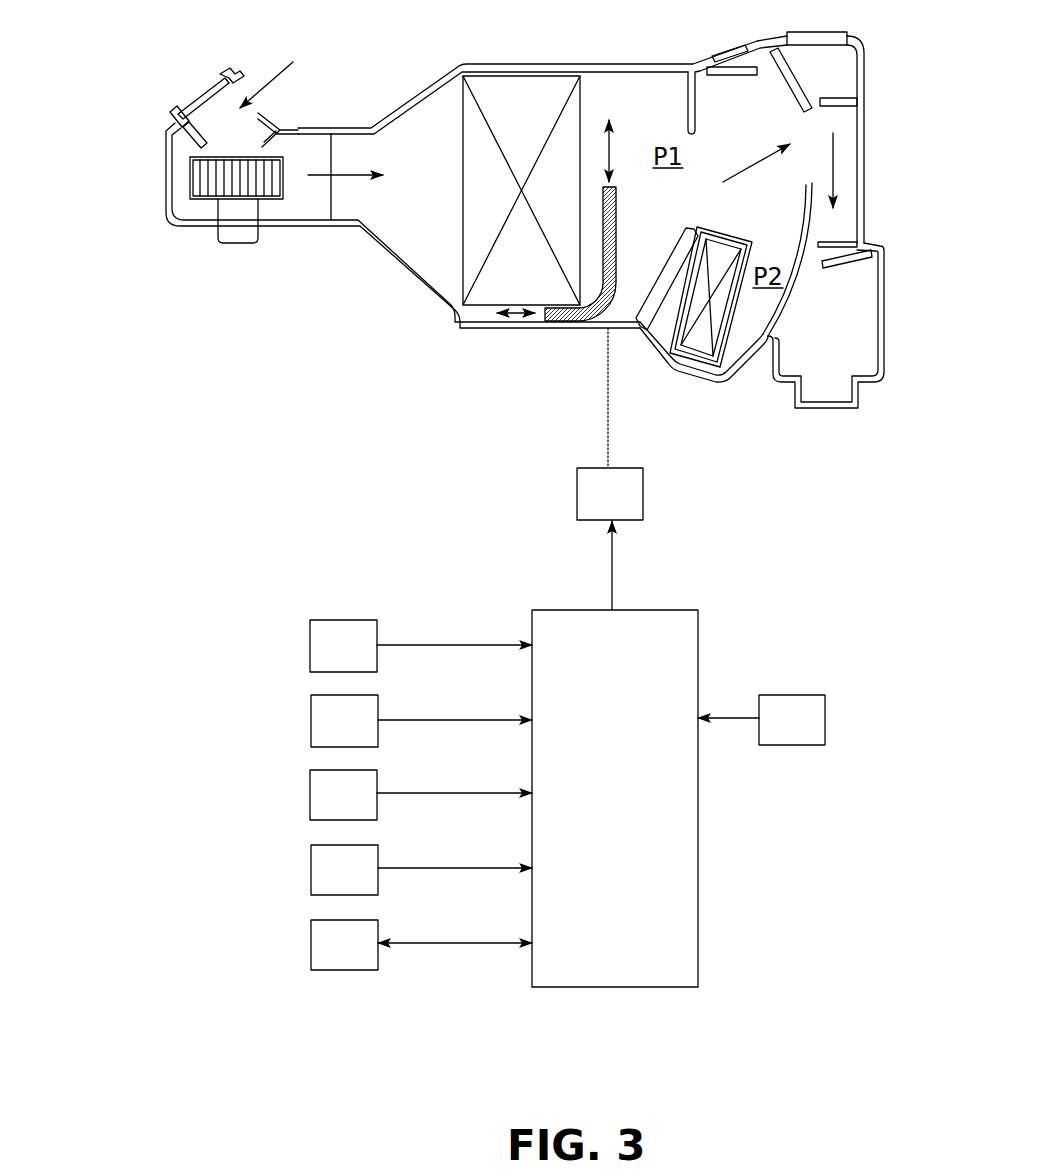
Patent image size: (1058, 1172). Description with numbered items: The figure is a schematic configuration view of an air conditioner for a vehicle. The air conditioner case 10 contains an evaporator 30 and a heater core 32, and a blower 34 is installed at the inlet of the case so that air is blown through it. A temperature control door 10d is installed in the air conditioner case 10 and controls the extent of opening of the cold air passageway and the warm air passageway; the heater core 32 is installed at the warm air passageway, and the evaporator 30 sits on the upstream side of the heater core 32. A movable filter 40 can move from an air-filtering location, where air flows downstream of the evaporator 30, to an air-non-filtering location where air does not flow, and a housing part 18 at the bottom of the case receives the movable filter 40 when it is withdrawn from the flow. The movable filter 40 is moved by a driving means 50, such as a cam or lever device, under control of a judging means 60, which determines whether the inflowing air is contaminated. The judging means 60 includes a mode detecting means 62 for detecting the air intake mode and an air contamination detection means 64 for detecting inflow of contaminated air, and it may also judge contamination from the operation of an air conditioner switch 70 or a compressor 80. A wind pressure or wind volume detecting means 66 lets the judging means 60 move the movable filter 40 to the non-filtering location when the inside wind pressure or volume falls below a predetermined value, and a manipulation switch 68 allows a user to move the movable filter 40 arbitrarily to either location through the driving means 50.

The air conditioner case 10 is at (435, 85).
The temperature control door 10d is at (670, 263).
The housing part 18 is at (480, 315).
The evaporator 30 is at (502, 85).
The heater core 32 is at (693, 340).
The blower 34 is at (167, 143).
The movable filter 40 is at (560, 320).
The driving means 50 is at (628, 502).
The judging means 60 is at (680, 640).
The mode detecting means 62 is at (322, 650).
The air contamination detection means 64 is at (325, 727).
The wind pressure or wind volume detecting means 66 is at (810, 727).
The manipulation switch 68 is at (324, 800).
The air conditioner switch 70 is at (328, 876).
The compressor 80 is at (328, 951).